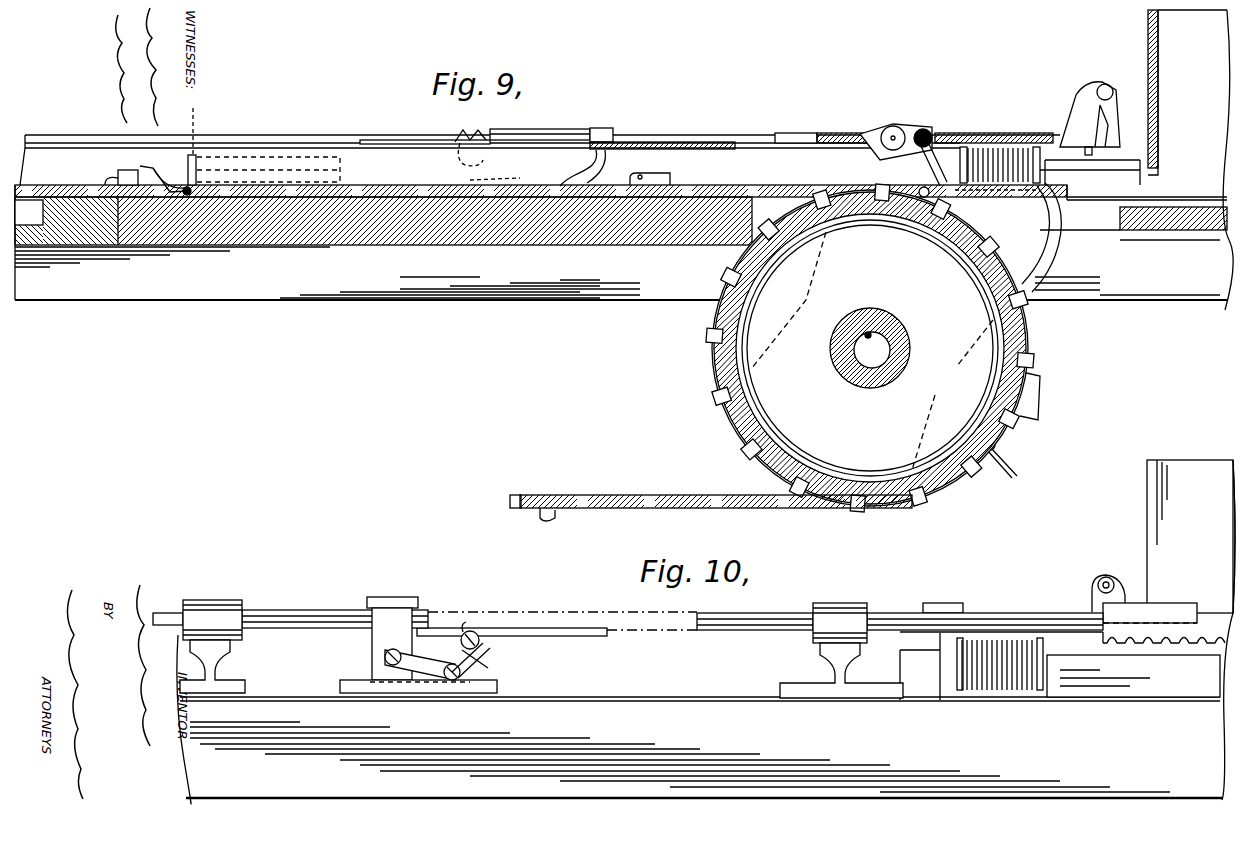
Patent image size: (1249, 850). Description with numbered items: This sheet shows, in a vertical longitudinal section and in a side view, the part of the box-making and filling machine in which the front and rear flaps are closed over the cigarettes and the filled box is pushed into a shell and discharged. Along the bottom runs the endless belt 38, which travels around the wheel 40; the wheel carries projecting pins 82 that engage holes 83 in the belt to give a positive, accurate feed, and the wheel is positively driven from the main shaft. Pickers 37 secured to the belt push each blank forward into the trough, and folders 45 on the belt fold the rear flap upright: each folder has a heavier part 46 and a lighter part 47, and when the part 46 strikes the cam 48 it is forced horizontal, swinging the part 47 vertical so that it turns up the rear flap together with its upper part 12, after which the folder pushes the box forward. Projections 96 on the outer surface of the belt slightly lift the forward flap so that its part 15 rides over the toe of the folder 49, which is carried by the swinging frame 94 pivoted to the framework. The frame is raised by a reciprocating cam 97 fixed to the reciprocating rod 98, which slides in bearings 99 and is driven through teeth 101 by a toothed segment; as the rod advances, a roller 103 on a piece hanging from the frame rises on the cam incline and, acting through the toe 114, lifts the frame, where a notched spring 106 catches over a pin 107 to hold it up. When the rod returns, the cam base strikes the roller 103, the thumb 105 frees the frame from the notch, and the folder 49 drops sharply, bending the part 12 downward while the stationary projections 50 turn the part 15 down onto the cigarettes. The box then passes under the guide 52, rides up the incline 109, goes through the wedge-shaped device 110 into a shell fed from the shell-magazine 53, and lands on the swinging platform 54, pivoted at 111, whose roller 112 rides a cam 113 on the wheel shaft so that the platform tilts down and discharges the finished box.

In FIG. 9, the part of rear flap 12 is at (196, 125).
In FIG. 9, the part of front flap 15 is at (500, 184).
In FIG. 9, the pickers 37 is at (116, 174).
In FIG. 9, the endless belt 38 is at (690, 495).
In FIG. 9, the wheel 40 is at (712, 354).
In FIG. 9, the folders 45 is at (186, 188).
In FIG. 9, the part of folder 46 is at (158, 170).
In FIG. 9, the part of folder 47 is at (190, 160).
In FIG. 9, the cam 48 is at (50, 212).
In FIG. 9, the folder 49 is at (598, 160).
In FIG. 9, the projections 50 is at (668, 142).
In FIG. 9, the guide 52 is at (808, 125).
In FIG. 9, the shell-magazine 53 is at (1148, 41).
In FIG. 10, the shell-magazine 53 is at (1186, 512).
In FIG. 9, the platform 54 is at (1032, 196).
In FIG. 9, the projecting pins 82 is at (738, 440).
In FIG. 9, the holes 83 is at (612, 495).
In FIG. 9, the swinging frame 94 is at (545, 132).
In FIG. 10, the swinging frame 94 is at (520, 628).
In FIG. 9, the projections 96 is at (572, 185).
In FIG. 10, the reciprocating cam 97 is at (420, 665).
In FIG. 10, the reciprocating rod 98 is at (300, 610).
In FIG. 10, the bearings 99 is at (225, 600).
In FIG. 10, the teeth 101 is at (1178, 645).
In FIG. 10, the roller 103 is at (488, 670).
In FIG. 10, the thumb 105 is at (470, 630).
In FIG. 9, the spring 106 is at (412, 139).
In FIG. 9, the pin 107 is at (480, 138).
In FIG. 9, the incline 109 is at (846, 186).
In FIG. 9, the wedge-shaped device 110 is at (915, 152).
In FIG. 9, the pivot 111 is at (935, 160).
In FIG. 9, the roller 112 is at (1032, 296).
In FIG. 9, the cam 113 is at (806, 298).
In FIG. 10, the toe 114 is at (495, 648).